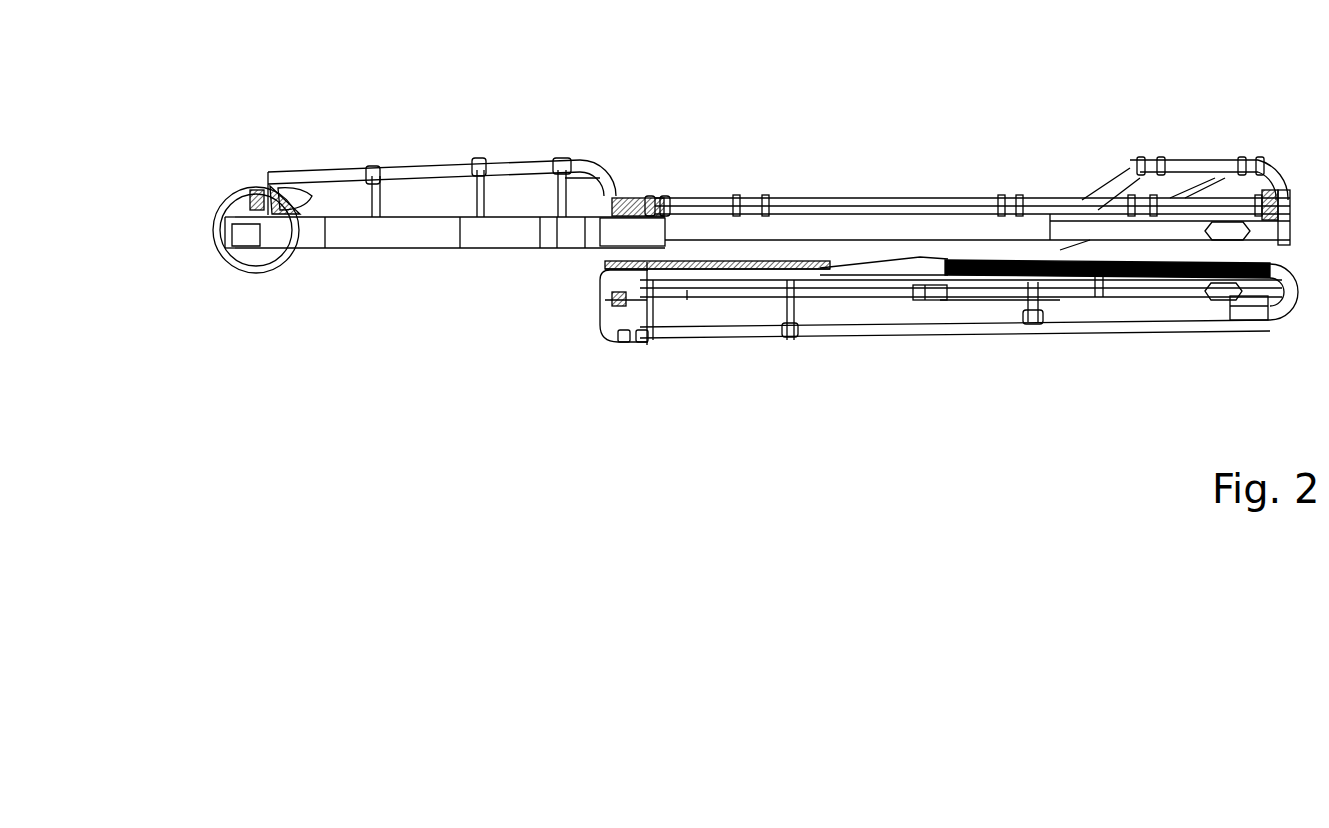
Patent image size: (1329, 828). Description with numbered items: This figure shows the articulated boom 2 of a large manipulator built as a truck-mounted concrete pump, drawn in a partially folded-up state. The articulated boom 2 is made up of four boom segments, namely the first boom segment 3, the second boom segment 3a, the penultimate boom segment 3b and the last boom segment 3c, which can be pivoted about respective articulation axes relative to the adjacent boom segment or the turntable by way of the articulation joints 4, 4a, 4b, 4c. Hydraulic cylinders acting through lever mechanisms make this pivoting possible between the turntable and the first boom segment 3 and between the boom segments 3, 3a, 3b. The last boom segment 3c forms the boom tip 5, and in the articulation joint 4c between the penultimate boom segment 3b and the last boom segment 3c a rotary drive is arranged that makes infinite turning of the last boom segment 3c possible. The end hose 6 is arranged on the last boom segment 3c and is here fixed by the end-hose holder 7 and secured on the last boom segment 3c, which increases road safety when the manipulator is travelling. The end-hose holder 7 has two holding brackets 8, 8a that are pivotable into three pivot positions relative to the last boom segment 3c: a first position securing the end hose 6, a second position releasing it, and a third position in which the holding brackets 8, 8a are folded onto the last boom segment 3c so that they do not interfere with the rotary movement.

The articulated boom 2 is at (195, 128).
The first boom segment 3 is at (405, 218).
The boom segment 3a is at (828, 224).
The penultimate boom segment 3b is at (1062, 242).
The last boom segment 3c is at (857, 276).
The articulation joint 4 is at (259, 195).
The articulation joint 4a is at (622, 212).
The articulation joint 4b is at (1283, 212).
The articulation joint 4c is at (614, 300).
The boom tip 5 is at (1272, 306).
The end hose 6 is at (1152, 262).
The end-hose holder 7 is at (1050, 300).
The holding bracket 8 is at (1100, 280).
The holding bracket 8a is at (1000, 280).